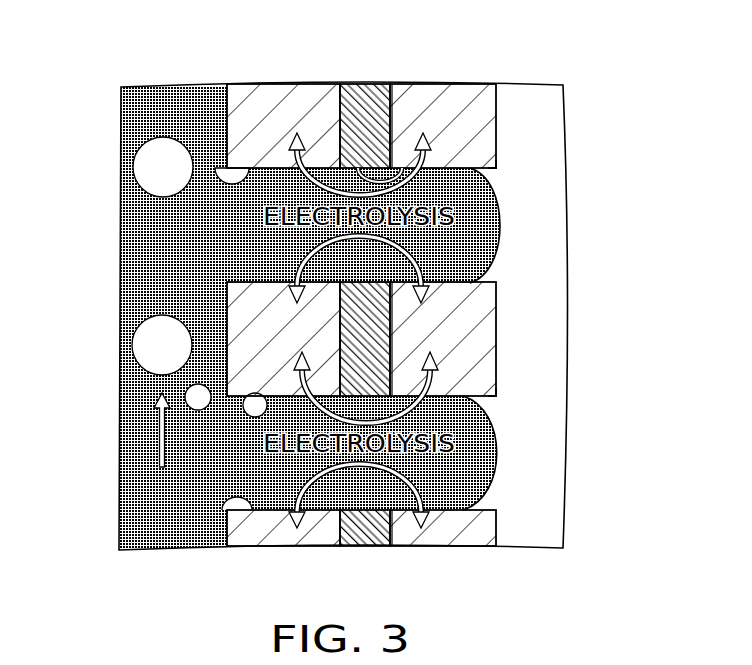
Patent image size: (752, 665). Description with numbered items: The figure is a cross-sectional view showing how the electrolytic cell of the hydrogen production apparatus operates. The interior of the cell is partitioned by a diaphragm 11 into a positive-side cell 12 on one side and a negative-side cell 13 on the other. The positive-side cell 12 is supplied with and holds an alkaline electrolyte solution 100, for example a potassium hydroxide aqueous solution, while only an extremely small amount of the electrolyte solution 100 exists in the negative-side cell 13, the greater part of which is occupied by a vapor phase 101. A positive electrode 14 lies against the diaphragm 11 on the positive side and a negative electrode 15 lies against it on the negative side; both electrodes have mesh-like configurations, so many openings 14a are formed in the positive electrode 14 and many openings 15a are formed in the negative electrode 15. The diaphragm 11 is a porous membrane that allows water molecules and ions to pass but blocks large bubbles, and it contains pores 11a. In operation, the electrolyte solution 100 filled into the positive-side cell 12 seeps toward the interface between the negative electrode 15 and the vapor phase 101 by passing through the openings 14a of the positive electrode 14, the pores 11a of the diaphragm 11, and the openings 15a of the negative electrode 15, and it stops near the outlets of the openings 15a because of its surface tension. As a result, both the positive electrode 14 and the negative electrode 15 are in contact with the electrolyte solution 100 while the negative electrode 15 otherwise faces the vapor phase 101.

The electrolyte solution 100 is at (160, 247).
The vapor phase 101 is at (507, 265).
The diaphragm 11 is at (367, 120).
The pores 11a is at (394, 172).
The positive-side cell 12 is at (162, 497).
The negative-side cell 13 is at (537, 503).
The positive electrode 14 is at (287, 107).
The openings 14a is at (215, 170).
The negative electrode 15 is at (460, 103).
The openings 15a is at (490, 175).